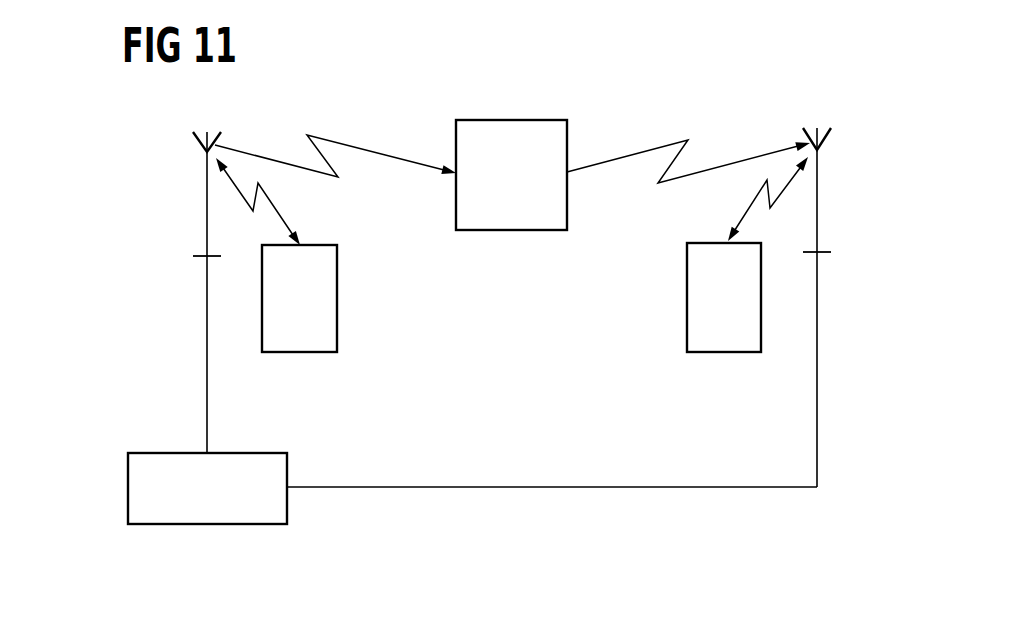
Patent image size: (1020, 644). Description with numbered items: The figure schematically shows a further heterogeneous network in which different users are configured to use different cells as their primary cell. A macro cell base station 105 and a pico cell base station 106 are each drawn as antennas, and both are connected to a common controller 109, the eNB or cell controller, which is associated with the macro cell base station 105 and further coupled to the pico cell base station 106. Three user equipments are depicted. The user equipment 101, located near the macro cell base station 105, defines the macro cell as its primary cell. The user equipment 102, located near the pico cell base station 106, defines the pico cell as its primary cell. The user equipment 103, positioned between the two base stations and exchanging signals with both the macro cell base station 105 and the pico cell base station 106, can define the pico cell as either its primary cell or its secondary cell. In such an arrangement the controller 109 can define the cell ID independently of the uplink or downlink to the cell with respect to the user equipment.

The user equipment 101 is at (300, 353).
The user equipment 102 is at (724, 352).
The user equipment 103 is at (510, 120).
The macro cell base station 105 is at (197, 145).
The pico cell base station 106 is at (827, 140).
The controller 109 is at (168, 453).